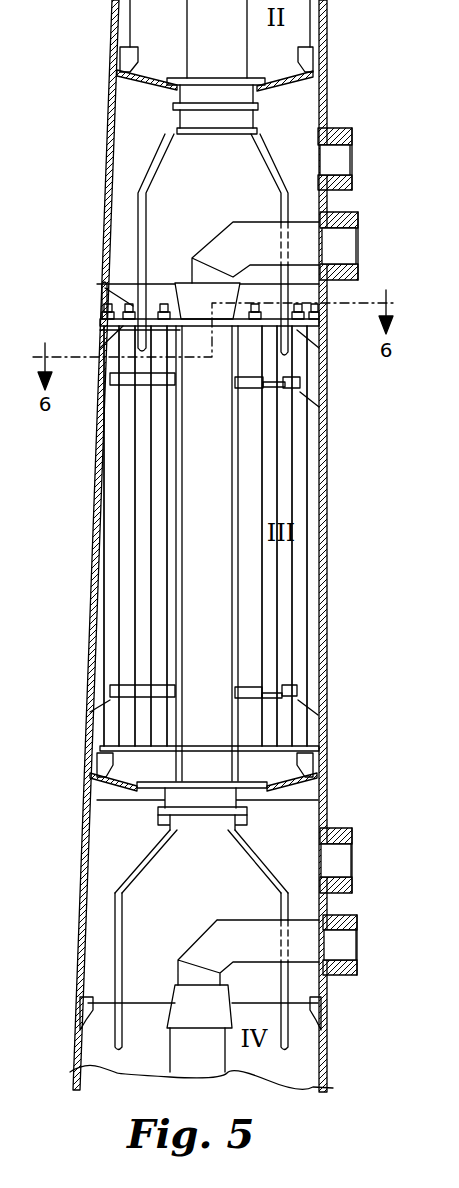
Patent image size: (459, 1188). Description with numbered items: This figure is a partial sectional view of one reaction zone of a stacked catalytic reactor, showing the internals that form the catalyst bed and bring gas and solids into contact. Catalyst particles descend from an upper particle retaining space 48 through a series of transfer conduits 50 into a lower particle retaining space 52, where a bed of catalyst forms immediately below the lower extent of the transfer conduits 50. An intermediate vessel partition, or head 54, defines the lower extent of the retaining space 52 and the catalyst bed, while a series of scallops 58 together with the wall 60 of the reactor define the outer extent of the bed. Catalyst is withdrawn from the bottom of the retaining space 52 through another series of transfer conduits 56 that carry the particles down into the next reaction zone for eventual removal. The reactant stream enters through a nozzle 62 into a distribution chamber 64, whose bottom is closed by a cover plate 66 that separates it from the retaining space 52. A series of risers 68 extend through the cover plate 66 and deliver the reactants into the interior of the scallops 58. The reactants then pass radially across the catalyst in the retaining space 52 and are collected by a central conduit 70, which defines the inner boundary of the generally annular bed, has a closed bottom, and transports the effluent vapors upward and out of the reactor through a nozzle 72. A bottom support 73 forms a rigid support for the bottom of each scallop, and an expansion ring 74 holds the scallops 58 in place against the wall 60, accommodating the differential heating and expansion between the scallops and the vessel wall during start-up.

The particle retaining space 48 is at (282, 46).
The transfer conduits 50 is at (157, 178).
The particle retaining space 52 is at (276, 590).
The intermediate vessel partition (head) 54 is at (283, 797).
The transfer conduits 56 is at (268, 882).
The scallops 58 is at (155, 511).
The wall 60 is at (92, 586).
The nozzle 62 is at (352, 133).
The distribution chamber 64 is at (184, 189).
The cover plate 66 is at (160, 284).
The risers 68 is at (100, 275).
The central conduit 70 is at (189, 602).
The nozzle 72 is at (358, 226).
The bottom support 73 is at (117, 758).
The expansion ring 74 is at (292, 387).